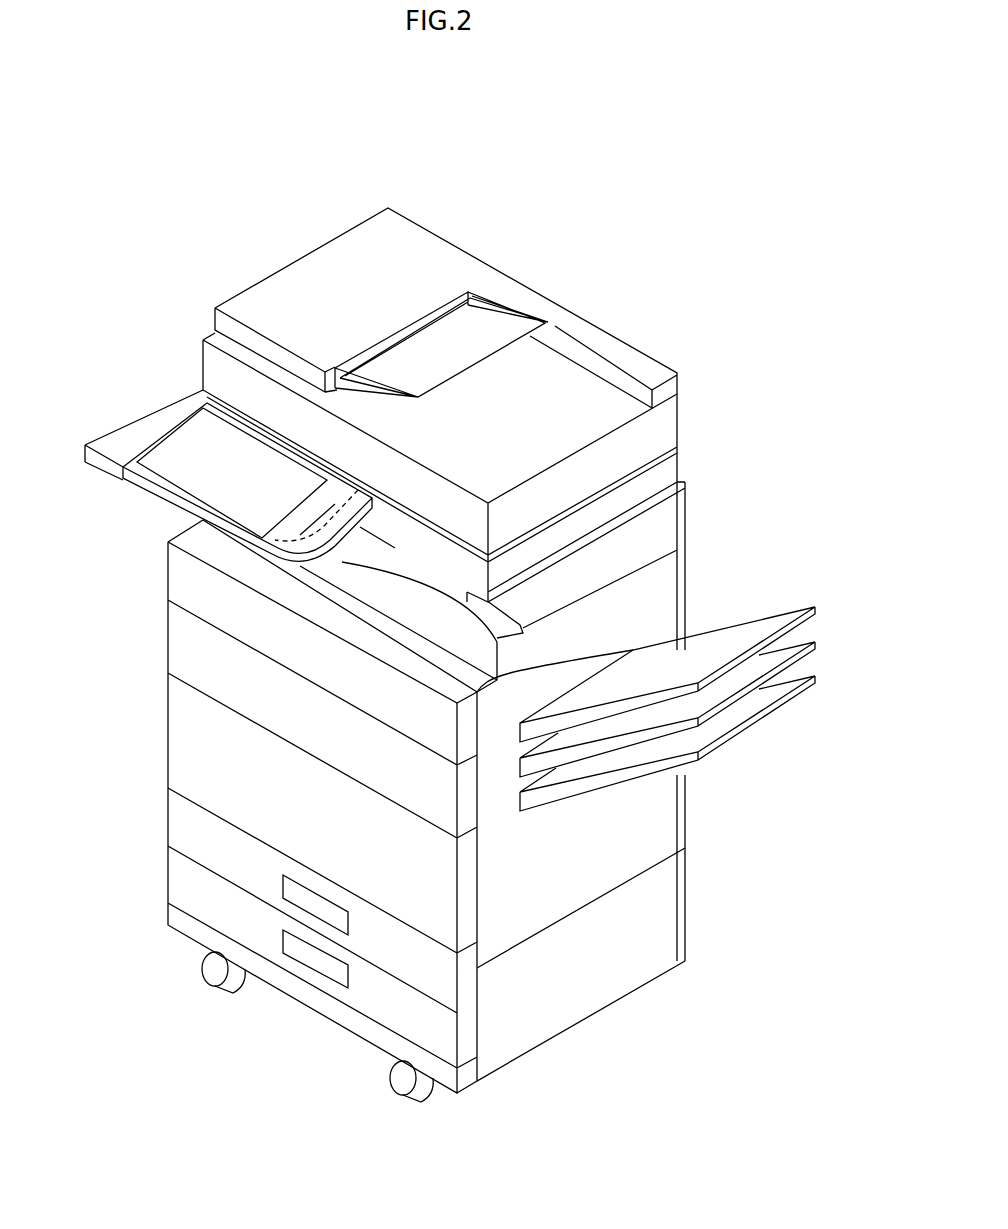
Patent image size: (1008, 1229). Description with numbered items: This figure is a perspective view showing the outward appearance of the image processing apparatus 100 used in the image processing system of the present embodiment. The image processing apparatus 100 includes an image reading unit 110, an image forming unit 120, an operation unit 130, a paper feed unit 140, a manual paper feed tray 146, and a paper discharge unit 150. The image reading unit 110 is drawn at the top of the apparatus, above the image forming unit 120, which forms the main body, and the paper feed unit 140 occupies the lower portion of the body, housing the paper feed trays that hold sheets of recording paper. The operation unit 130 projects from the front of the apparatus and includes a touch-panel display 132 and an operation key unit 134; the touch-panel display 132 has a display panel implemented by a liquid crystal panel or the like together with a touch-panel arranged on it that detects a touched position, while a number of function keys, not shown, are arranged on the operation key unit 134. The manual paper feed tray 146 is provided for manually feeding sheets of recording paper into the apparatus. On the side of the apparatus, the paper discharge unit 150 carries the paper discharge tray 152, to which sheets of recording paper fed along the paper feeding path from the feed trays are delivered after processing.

The image processing apparatus 100 is at (586, 238).
The image reading unit 110 is at (691, 401).
The image forming unit 120 is at (146, 698).
The operation unit 130 is at (178, 521).
The touch-panel display 132 is at (182, 466).
The operation key unit 134 is at (258, 544).
The paper feed unit 140 is at (146, 852).
The manual paper feed tray 146 is at (84, 443).
The paper discharge unit 150 is at (758, 596).
The paper discharge tray 152 is at (826, 605).